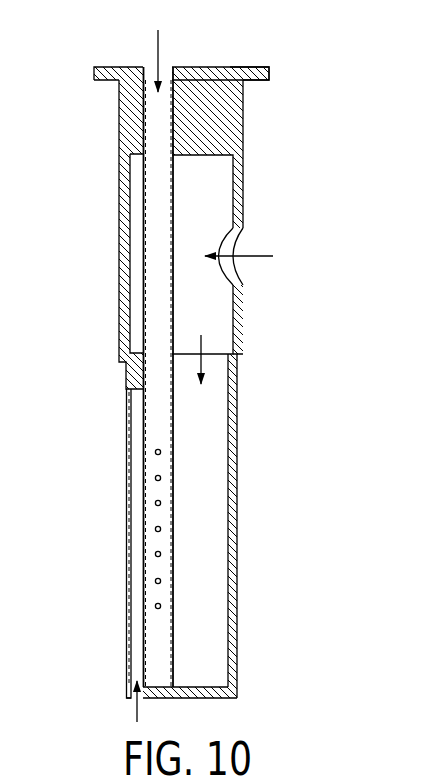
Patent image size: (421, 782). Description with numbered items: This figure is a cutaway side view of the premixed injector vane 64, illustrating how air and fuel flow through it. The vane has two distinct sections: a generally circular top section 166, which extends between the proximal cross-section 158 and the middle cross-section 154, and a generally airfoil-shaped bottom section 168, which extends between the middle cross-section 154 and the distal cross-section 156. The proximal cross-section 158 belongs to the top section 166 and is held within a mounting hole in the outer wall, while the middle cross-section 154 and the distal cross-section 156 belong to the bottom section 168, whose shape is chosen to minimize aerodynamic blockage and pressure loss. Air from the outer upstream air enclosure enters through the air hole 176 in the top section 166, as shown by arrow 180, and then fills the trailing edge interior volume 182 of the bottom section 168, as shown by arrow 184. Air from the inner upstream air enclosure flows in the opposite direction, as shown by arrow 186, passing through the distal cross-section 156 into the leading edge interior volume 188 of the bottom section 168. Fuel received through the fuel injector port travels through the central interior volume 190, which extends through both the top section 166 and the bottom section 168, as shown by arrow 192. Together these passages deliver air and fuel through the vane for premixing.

The proximal cross-section 158 is at (78, 63).
The premixed injector vane 64 is at (290, 78).
The top section 166 is at (278, 153).
The middle cross-section 154 is at (95, 377).
The central interior volume 190 is at (155, 242).
The air hole 176 is at (239, 233).
The arrow 180 is at (248, 257).
The arrow 192 is at (160, 47).
The arrow 184 is at (202, 370).
The leading edge interior volume 188 is at (137, 478).
The trailing edge interior volume 182 is at (217, 465).
The bottom section 168 is at (275, 533).
The distal cross-section 156 is at (97, 695).
The arrow 186 is at (133, 708).